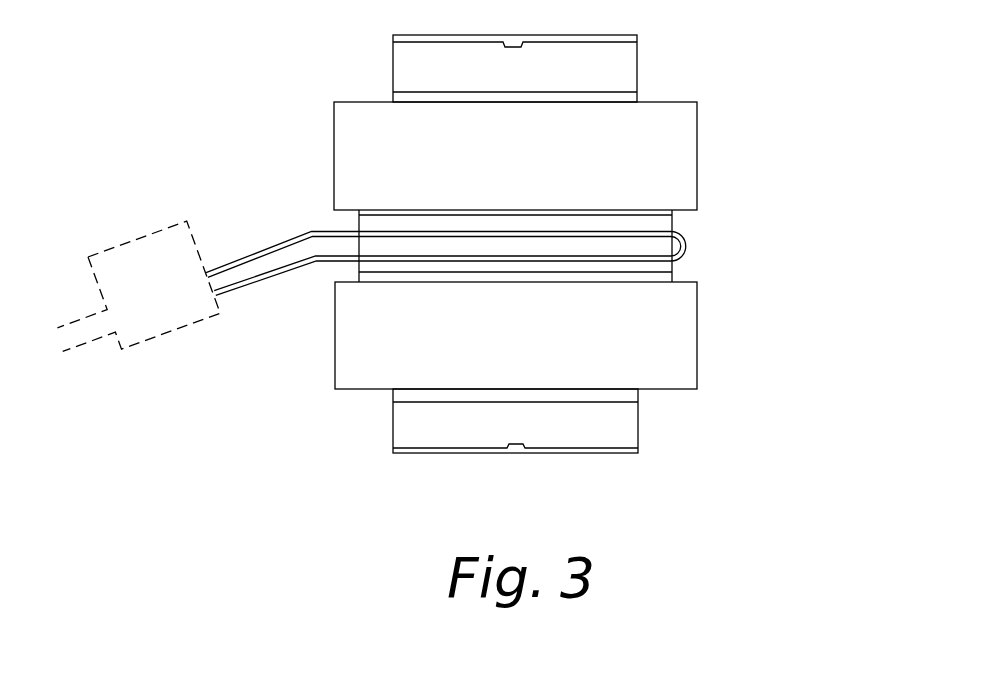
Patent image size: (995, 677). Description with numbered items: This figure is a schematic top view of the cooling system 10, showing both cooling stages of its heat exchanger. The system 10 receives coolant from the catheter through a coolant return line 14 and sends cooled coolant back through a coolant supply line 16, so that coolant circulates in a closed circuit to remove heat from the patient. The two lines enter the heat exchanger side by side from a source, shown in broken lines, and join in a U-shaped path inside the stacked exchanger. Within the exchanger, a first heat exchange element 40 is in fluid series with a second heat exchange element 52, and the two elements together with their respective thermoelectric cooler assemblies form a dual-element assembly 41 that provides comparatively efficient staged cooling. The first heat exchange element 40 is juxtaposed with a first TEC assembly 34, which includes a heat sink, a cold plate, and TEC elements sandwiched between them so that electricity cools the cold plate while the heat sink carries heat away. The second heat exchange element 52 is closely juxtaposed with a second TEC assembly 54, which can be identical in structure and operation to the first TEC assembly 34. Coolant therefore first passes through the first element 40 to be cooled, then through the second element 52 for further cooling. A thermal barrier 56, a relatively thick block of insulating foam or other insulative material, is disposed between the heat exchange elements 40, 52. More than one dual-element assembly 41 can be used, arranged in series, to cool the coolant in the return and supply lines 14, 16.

The system 10 is at (742, 33).
The coolant return line 14 is at (242, 262).
The coolant supply line 16 is at (287, 270).
The first thermoelectric cooler (TEC) assembly 34 is at (697, 153).
The first heat exchange element 40 is at (672, 227).
The dual-element assembly 41 is at (97, 278).
The second heat exchange element 52 is at (672, 265).
The second TEC assembly 54 is at (697, 332).
The thermal barrier 56 is at (395, 250).